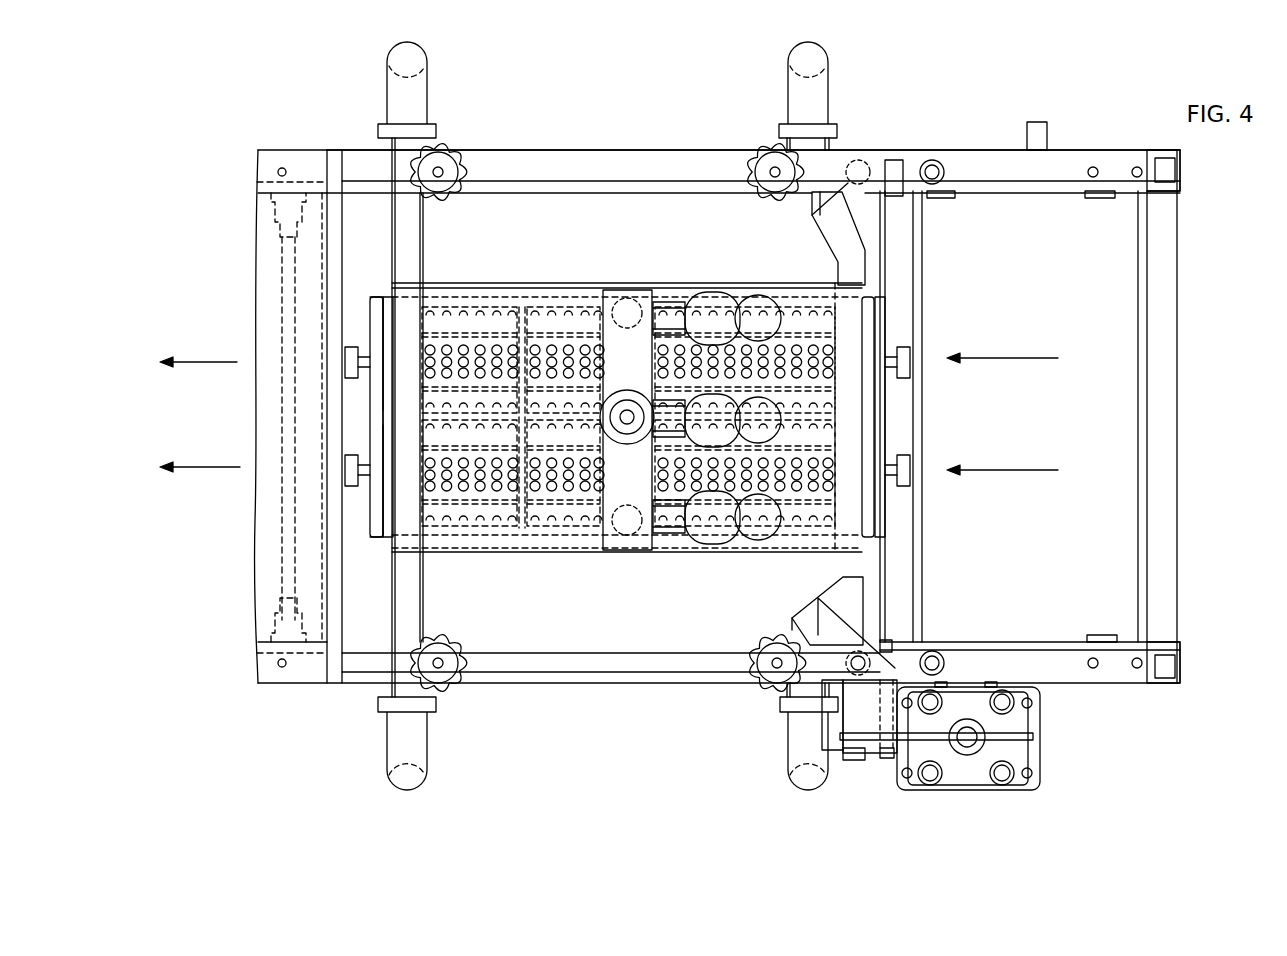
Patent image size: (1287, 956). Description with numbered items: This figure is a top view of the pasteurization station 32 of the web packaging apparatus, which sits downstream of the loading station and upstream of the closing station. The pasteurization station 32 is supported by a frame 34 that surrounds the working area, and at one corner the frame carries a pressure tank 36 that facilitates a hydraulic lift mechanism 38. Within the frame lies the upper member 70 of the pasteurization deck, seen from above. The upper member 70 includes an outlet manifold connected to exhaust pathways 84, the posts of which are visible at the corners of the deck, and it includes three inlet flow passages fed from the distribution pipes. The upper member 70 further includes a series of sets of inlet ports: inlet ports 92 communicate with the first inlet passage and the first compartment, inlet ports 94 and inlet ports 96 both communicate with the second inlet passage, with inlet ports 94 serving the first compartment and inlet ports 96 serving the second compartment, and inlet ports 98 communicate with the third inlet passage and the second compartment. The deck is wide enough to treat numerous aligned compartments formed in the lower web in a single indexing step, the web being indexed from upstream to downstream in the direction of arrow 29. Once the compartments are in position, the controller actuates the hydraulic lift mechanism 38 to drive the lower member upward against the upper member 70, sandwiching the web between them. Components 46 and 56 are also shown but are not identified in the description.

The arrow 29 is at (212, 362).
The pasteurization station 32 is at (1130, 722).
The frame 34 is at (988, 158).
The pressure tank 36 is at (970, 775).
The hydraulic lift mechanism 38 is at (870, 772).
The central drive shaft assembly 46 is at (613, 290).
The rollers 56 is at (728, 295).
The upper member 70 is at (583, 540).
The exhaust pathways 84 is at (415, 102).
The inlet ports 92 is at (507, 533).
The inlet ports 94 is at (423, 430).
The inlet ports 96 is at (422, 408).
The inlet ports 98 is at (477, 308).